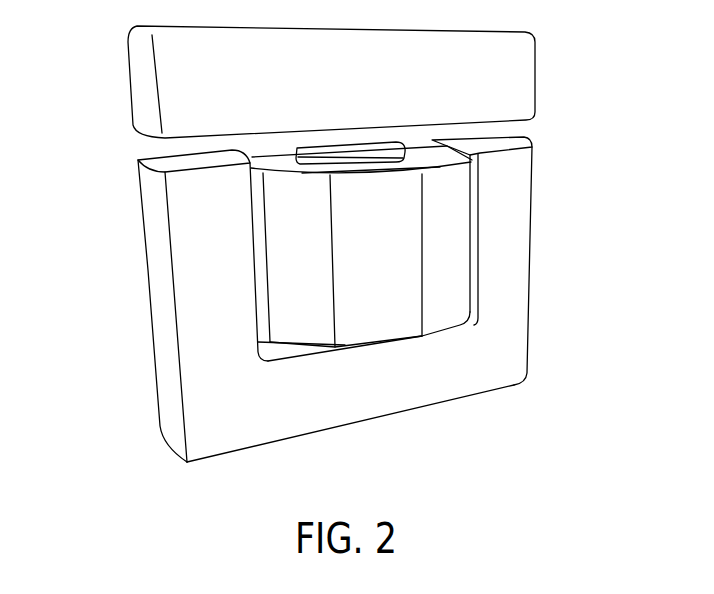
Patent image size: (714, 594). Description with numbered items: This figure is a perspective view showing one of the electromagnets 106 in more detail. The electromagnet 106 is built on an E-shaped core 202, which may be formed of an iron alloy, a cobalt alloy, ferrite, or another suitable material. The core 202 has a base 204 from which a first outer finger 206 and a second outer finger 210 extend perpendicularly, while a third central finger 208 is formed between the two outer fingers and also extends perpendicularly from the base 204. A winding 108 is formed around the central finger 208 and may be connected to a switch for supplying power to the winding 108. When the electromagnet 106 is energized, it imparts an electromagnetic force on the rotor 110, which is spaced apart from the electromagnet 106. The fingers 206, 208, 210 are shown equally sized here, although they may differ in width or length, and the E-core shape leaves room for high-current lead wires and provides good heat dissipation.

The electromagnet 106 is at (108, 452).
The winding 108 is at (392, 277).
The rotor 110 is at (520, 65).
The E-shaped core 202 is at (133, 362).
The base 204 is at (368, 395).
The first outer finger 206 is at (187, 295).
The third central finger 208 is at (357, 148).
The second outer finger 210 is at (518, 193).